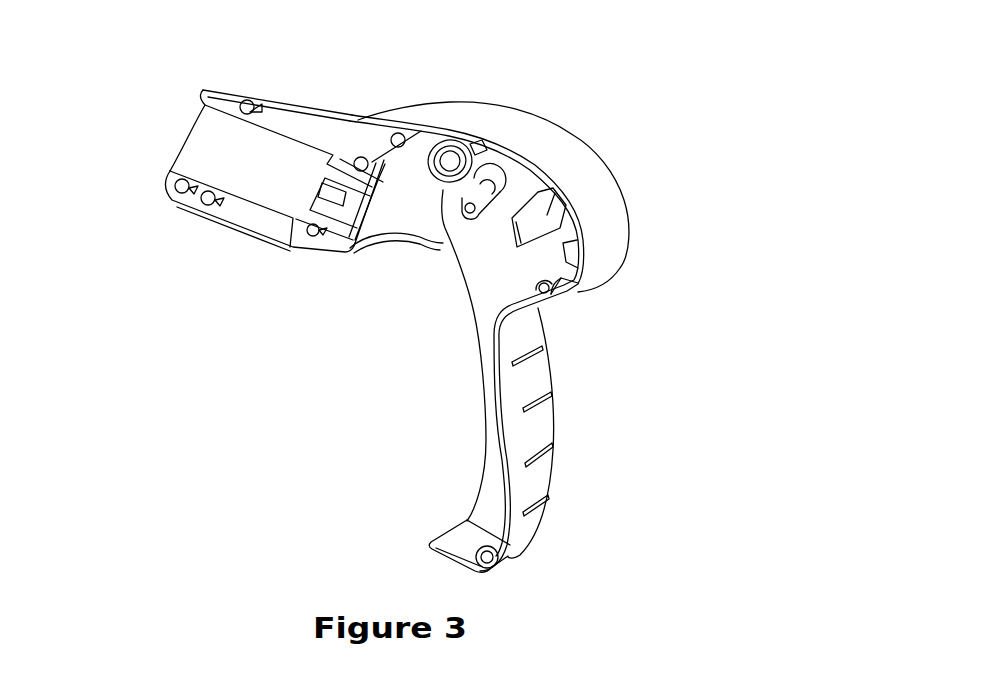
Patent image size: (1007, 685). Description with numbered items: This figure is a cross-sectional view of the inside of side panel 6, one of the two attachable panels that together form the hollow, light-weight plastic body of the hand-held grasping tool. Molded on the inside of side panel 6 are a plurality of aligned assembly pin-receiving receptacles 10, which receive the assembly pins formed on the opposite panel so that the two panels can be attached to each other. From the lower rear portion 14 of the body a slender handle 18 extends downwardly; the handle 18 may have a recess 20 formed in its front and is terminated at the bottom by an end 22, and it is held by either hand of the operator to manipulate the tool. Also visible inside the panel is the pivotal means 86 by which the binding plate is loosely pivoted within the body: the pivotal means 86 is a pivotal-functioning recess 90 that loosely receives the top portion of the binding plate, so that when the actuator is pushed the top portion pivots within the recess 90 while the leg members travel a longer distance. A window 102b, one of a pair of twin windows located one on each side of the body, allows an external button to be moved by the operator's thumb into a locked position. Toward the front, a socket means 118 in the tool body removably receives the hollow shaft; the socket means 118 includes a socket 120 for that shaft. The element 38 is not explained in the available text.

The side panel 6 is at (380, 177).
The assembly pin-receiving receptacles 10 is at (360, 157).
The lower rear portion 14 is at (562, 300).
The handle 18 is at (545, 421).
The recess 20 is at (497, 425).
The end 22 is at (446, 557).
The barrel 38 is at (188, 136).
The pivotal means 86 is at (493, 84).
The pivotal-functioning recess 90 is at (452, 196).
The window 102b is at (552, 194).
The socket means 118 is at (320, 272).
The socket 120 is at (332, 190).